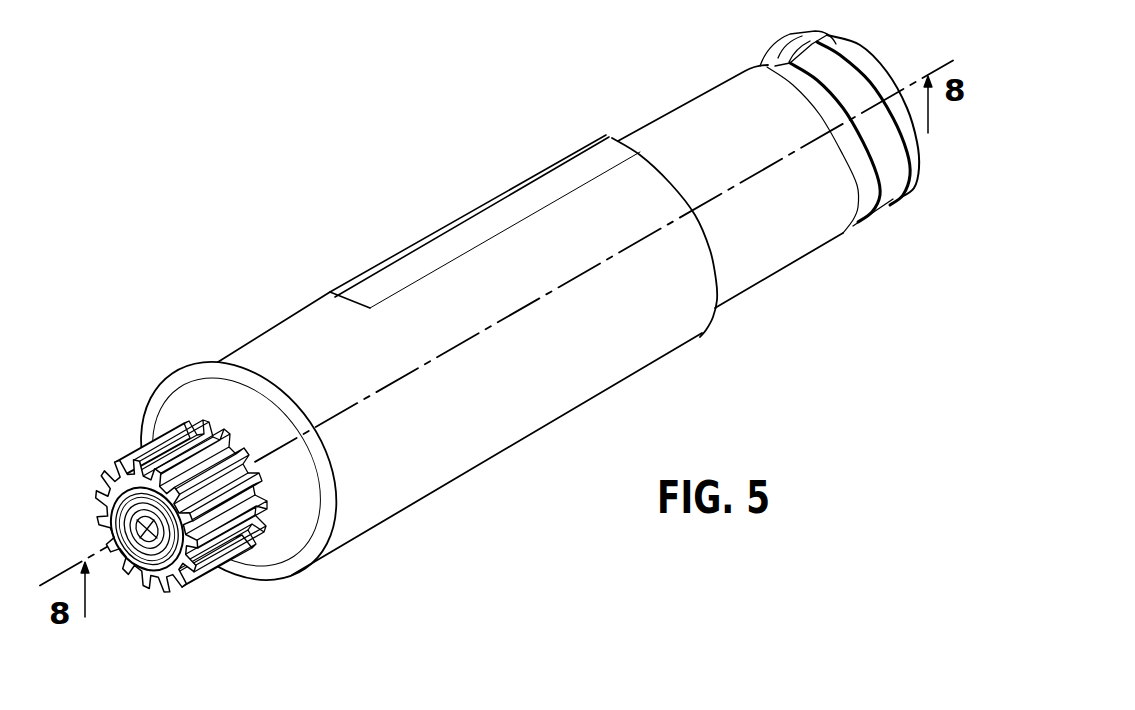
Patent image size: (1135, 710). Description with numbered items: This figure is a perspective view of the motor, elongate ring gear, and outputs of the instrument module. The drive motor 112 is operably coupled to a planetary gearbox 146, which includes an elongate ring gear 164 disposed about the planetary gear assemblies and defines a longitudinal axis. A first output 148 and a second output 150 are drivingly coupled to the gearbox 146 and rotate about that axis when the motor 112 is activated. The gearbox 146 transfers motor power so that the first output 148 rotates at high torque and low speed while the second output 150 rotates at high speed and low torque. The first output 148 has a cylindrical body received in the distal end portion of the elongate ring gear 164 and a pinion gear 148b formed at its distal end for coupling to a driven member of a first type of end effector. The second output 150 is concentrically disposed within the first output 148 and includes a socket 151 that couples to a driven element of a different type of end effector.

The drive motor 112 is at (705, 108).
The gearbox 146 is at (290, 316).
The first output 148 is at (156, 504).
The pinion gear 148b is at (203, 574).
The second output 150 is at (115, 497).
The socket 151 is at (127, 527).
The elongate ring gear 164 is at (684, 327).